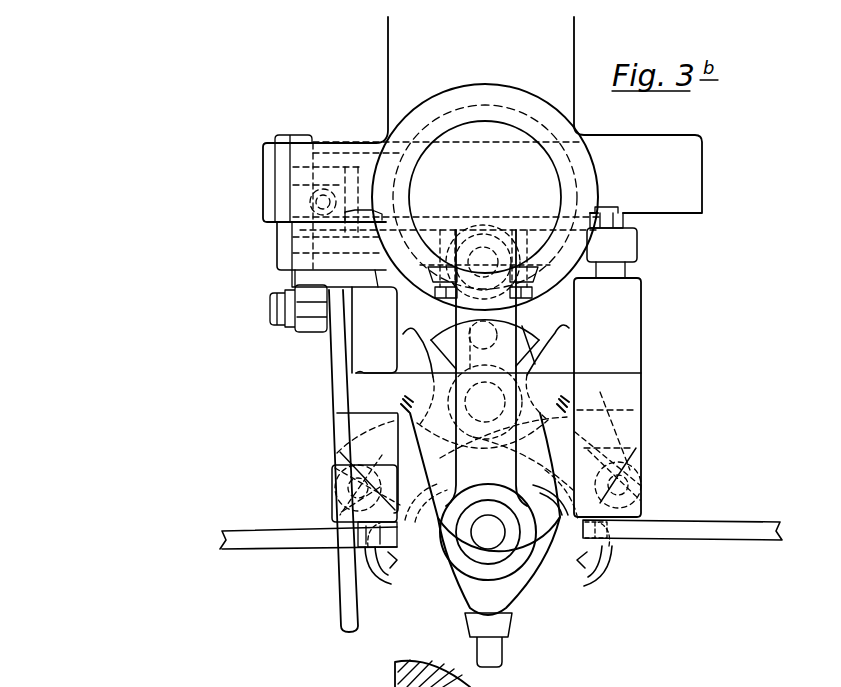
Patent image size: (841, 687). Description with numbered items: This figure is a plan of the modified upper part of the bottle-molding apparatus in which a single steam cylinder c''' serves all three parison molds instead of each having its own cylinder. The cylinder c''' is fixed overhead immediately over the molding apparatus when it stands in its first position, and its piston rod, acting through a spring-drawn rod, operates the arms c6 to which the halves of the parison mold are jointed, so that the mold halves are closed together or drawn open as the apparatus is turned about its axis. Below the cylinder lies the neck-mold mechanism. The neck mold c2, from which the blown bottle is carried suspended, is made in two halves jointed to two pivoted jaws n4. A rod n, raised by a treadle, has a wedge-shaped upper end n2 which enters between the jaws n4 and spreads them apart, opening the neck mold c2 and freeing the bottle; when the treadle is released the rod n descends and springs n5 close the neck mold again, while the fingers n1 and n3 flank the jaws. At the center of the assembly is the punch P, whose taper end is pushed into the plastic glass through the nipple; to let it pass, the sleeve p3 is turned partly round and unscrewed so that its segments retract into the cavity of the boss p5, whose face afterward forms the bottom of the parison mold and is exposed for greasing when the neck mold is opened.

The cylinder c''' is at (485, 197).
The rod n is at (498, 368).
The left guide segment n1 is at (443, 353).
The wedge-shaped upper end n2 is at (489, 350).
The left curved guide finger n3 is at (418, 376).
The pivoted jaws n4 is at (522, 330).
The springs n5 is at (547, 372).
The arms c6 is at (501, 534).
The neck mold c2 is at (490, 557).
The sleeve p3 is at (548, 552).
The boss p5 is at (452, 606).
The punch P is at (488, 532).